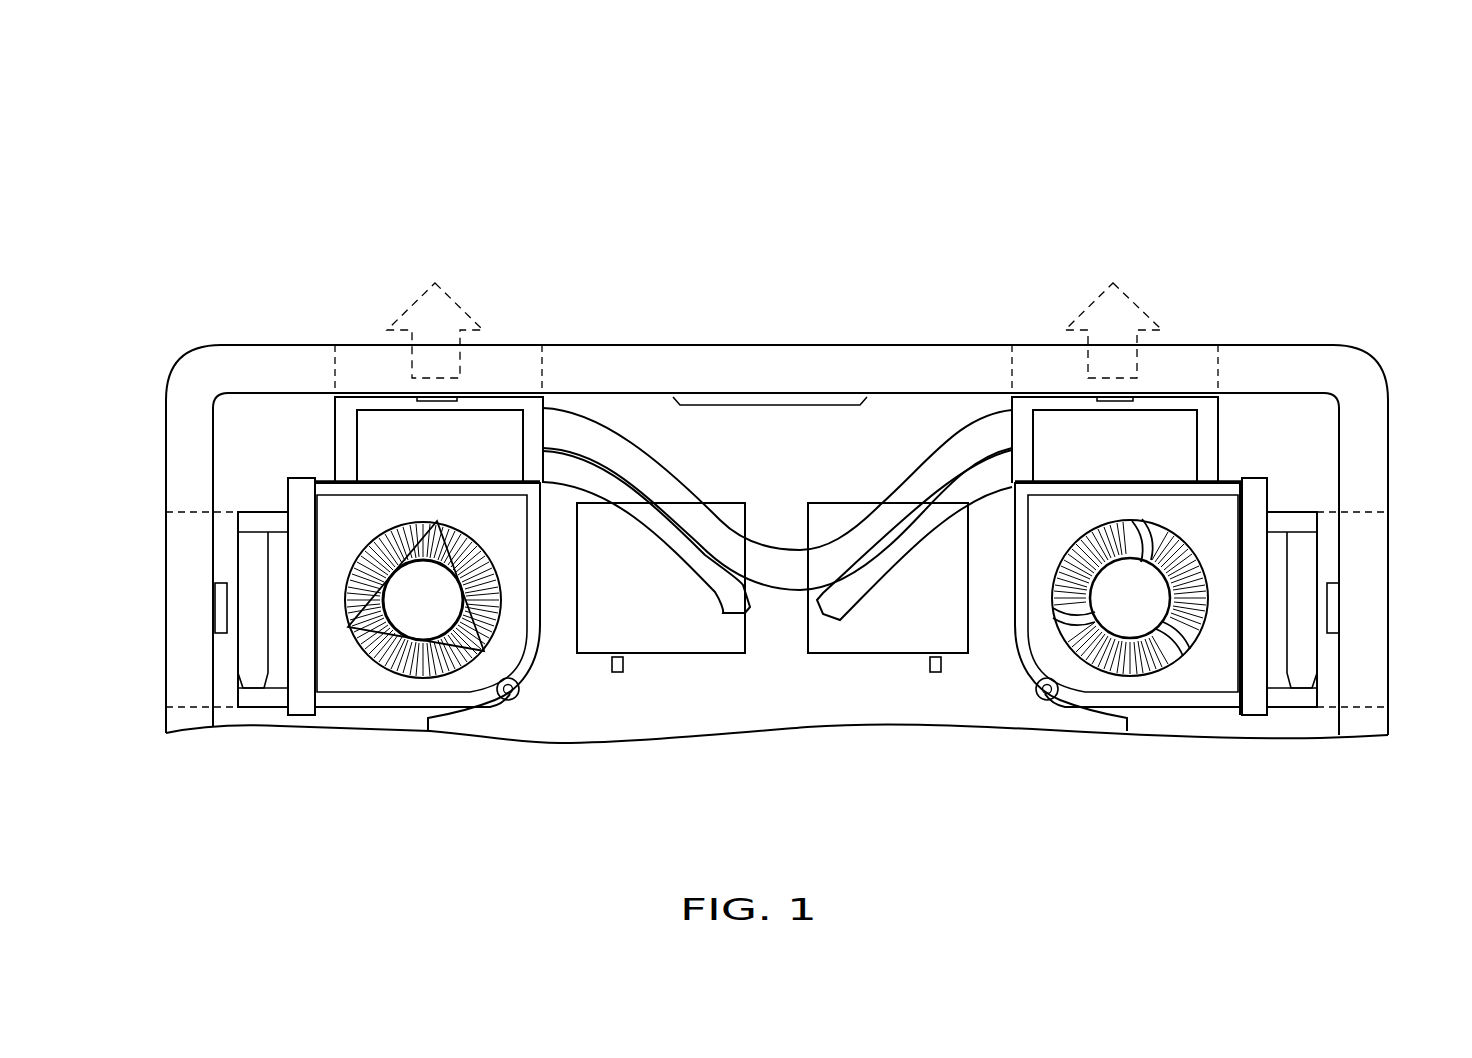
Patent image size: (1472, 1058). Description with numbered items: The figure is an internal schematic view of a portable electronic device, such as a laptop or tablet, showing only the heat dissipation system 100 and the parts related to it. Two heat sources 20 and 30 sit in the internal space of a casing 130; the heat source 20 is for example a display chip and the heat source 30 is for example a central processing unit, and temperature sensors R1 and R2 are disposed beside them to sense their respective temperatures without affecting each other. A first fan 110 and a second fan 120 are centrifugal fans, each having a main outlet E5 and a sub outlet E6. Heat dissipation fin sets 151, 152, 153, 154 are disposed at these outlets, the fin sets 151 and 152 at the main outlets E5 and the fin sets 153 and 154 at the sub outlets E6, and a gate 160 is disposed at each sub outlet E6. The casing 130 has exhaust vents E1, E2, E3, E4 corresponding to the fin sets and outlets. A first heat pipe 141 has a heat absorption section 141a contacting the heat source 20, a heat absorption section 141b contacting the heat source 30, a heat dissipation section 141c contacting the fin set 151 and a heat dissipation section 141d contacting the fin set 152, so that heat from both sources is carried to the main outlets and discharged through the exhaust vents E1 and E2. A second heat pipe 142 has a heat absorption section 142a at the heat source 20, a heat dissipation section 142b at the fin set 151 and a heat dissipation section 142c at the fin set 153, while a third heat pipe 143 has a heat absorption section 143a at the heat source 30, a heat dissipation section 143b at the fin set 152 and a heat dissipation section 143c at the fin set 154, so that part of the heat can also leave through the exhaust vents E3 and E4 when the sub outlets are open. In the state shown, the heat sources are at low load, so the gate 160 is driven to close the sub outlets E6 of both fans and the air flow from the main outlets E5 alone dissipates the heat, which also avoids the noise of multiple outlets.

The heat dissipation system 100 is at (1428, 839).
The first fan 110 is at (513, 623).
The second fan 120 is at (1043, 627).
The casing 130 is at (1362, 358).
The first heat pipe 141 is at (140, 85).
The heat absorption section 141a is at (720, 518).
The heat absorption section 141b is at (855, 523).
The heat dissipation section 141c is at (420, 435).
The heat dissipation section 141d is at (1182, 293).
The second heat pipe 142 is at (257, 85).
The heat absorption section 142a is at (657, 808).
The heat dissipation section 142b is at (140, 551).
The heat dissipation section 142c is at (150, 661).
The third heat pipe 143 is at (376, 85).
The heat absorption section 143a is at (893, 808).
The heat dissipation section 143b is at (1410, 552).
The heat dissipation section 143c is at (1295, 783).
The heat dissipation fin set 151 is at (355, 393).
The heat dissipation fin set 152 is at (1198, 393).
The heat dissipation fin set 153 is at (225, 690).
The heat dissipation fin set 154 is at (1328, 673).
The gate 160 is at (298, 485).
The heat source 20 is at (712, 640).
The heat source 30 is at (846, 640).
The temperature sensor R1 is at (617, 673).
The temperature sensor R2 is at (936, 673).
The exhaust vent E1 is at (499, 371).
The exhaust vent E2 is at (1051, 371).
The exhaust vent E3 is at (188, 612).
The exhaust vent E4 is at (1365, 613).
The main outlet E5 is at (483, 478).
The sub outlet E6 is at (311, 675).